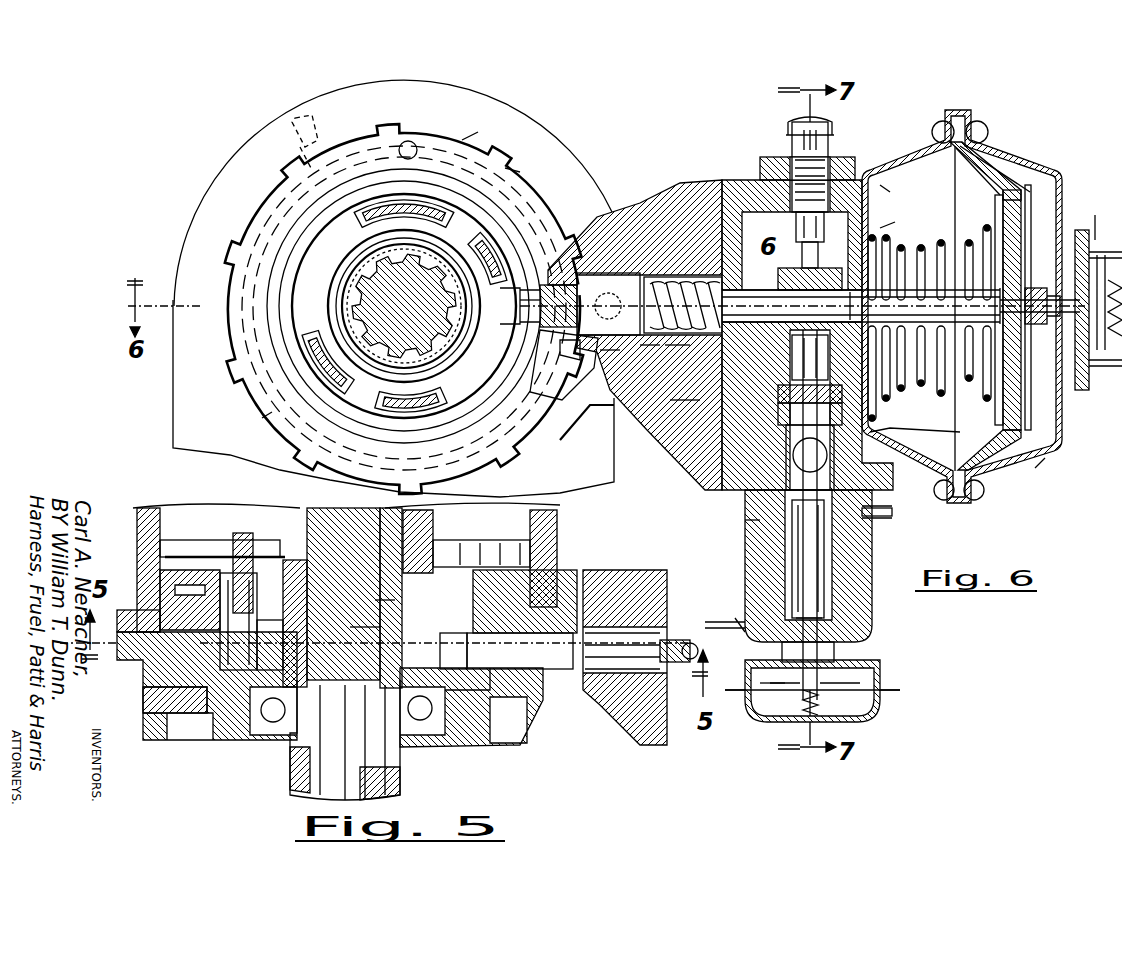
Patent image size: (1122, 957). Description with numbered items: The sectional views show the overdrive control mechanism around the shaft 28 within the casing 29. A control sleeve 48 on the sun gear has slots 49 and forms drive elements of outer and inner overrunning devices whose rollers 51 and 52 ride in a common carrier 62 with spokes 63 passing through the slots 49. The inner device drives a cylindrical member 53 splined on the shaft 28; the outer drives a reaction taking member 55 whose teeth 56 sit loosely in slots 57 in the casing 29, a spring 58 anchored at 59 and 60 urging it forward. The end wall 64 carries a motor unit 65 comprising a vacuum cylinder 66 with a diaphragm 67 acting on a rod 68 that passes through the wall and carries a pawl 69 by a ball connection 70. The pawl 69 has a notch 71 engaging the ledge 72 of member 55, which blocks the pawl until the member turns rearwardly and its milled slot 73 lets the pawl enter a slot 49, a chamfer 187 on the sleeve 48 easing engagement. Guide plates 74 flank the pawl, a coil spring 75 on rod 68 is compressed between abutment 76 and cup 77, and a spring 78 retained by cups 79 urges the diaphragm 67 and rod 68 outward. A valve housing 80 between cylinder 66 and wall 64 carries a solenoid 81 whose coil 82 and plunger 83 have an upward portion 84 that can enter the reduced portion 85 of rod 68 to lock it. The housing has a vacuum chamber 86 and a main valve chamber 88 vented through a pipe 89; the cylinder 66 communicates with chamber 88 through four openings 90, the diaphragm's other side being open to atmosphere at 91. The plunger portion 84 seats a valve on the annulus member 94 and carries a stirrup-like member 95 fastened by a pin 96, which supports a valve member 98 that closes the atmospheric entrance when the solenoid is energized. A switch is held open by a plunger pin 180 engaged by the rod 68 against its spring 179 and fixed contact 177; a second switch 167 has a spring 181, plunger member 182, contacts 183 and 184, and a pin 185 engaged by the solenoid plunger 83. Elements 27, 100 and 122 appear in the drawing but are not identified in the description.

In FIG. 5, the ball bearing 27 is at (273, 724).
In FIG. 6, the shaft 28 is at (418, 303).
In FIG. 5, the shaft 28 is at (354, 553).
In FIG. 6, the casing 29 is at (570, 162).
In FIG. 6, the control sleeve 48 is at (392, 244).
In FIG. 5, the control sleeve 48 is at (250, 557).
In FIG. 6, the slots 49 is at (466, 248).
In FIG. 5, the rollers of outer overrunning device 51 is at (205, 592).
In FIG. 5, the rollers of inner overrunning device 52 is at (360, 598).
In FIG. 6, the cylindrical member 53 is at (432, 392).
In FIG. 5, the cylindrical member 53 is at (351, 625).
In FIG. 6, the reaction taking member 55 is at (478, 142).
In FIG. 5, the reaction taking member 55 is at (525, 568).
In FIG. 6, the teeth 56 is at (508, 164).
In FIG. 6, the slots 57 is at (380, 134).
In FIG. 6, the spring 58 is at (262, 420).
In FIG. 5, the spring 58 is at (180, 560).
In FIG. 6, the spring anchorage to casing 59 is at (290, 115).
In FIG. 6, the spring anchorage to member 60 is at (420, 143).
In FIG. 6, the cage or carrier 62 is at (313, 290).
In FIG. 5, the spokes 63 is at (368, 601).
In FIG. 6, the end wall 64 is at (700, 182).
In FIG. 5, the end wall 64 is at (642, 578).
In FIG. 6, the motor unit 65 is at (365, 196).
In FIG. 5, the motor unit 65 is at (558, 570).
In FIG. 6, the vacuum cylinder 66 is at (1012, 162).
In FIG. 6, the diaphragm 67 is at (1022, 200).
In FIG. 6, the rod 68 is at (942, 313).
In FIG. 5, the rod 68 is at (672, 640).
In FIG. 6, the pawl 69 is at (585, 275).
In FIG. 5, the pawl 69 is at (565, 663).
In FIG. 6, the ball connection 70 is at (620, 276).
In FIG. 6, the notch 71 is at (558, 306).
In FIG. 5, the notch 71 is at (469, 651).
In FIG. 6, the ledge 72 is at (570, 390).
In FIG. 5, the ledge 72 is at (525, 601).
In FIG. 6, the milled slot 73 is at (570, 350).
In FIG. 6, the guide plates 74 is at (614, 359).
In FIG. 6, the coil spring 75 is at (692, 277).
In FIG. 6, the abutment 76 is at (677, 353).
In FIG. 6, the cup 77 is at (652, 354).
In FIG. 5, the cup 77 is at (640, 725).
In FIG. 6, the coil spring 78 is at (893, 222).
In FIG. 6, the cups 79 is at (890, 428).
In FIG. 6, the valve housing 80 is at (748, 180).
In FIG. 6, the electrical solenoid 81 is at (872, 558).
In FIG. 6, the coil 82 is at (750, 528).
In FIG. 6, the plunger 83 is at (790, 565).
In FIG. 6, the upwardly extending portion 84 is at (810, 357).
In FIG. 6, the reduced portion 85 is at (870, 310).
In FIG. 6, the chamber 86 is at (786, 455).
In FIG. 6, the main valve chamber 88 is at (685, 388).
In FIG. 6, the pipe 89 is at (788, 130).
In FIG. 6, the openings 90 is at (893, 245).
In FIG. 6, the atmospheric opening 91 is at (1040, 450).
In FIG. 6, the annulus member 94 is at (786, 430).
In FIG. 6, the stirrup-like member 95 is at (778, 408).
In FIG. 6, the pin 96 is at (778, 390).
In FIG. 6, the valve member 98 is at (894, 185).
In FIG. 6, the valve 100 is at (832, 142).
In FIG. 6, the bolt 122 is at (725, 632).
In FIG. 6, the switch 167 is at (895, 512).
In FIG. 6, the fixed contact 177 is at (1095, 215).
In FIG. 6, the spring 179 is at (1082, 250).
In FIG. 6, the actuating pin 180 is at (1025, 306).
In FIG. 6, the spring 181 is at (800, 722).
In FIG. 6, the plunger member 182 is at (862, 683).
In FIG. 6, the contact 183 is at (862, 690).
In FIG. 6, the contact 184 is at (758, 683).
In FIG. 6, the actuating pin 185 is at (809, 607).
In FIG. 6, the chamfer 187 is at (535, 425).